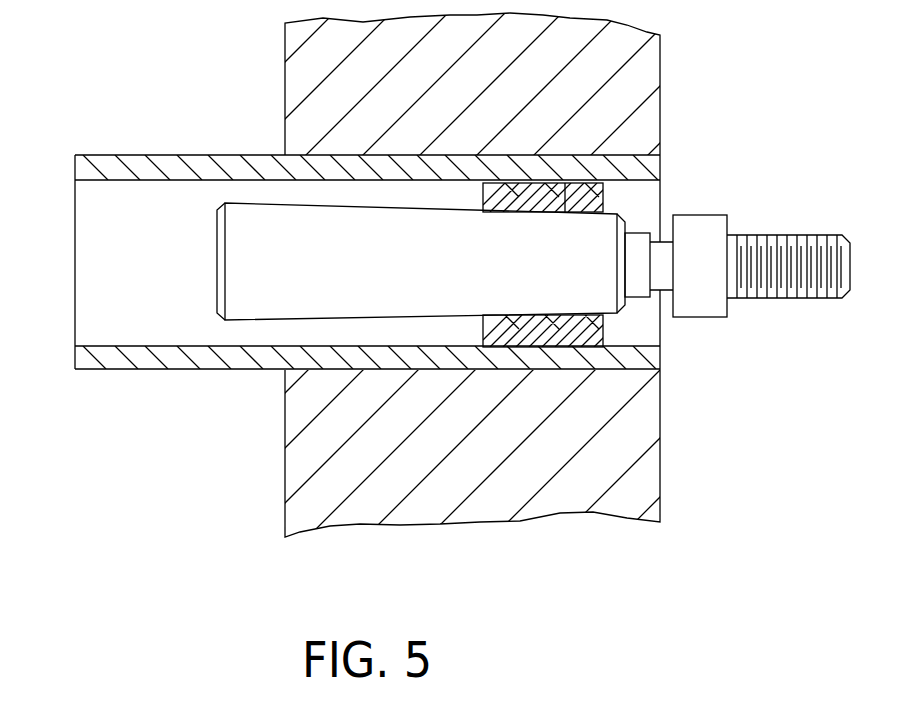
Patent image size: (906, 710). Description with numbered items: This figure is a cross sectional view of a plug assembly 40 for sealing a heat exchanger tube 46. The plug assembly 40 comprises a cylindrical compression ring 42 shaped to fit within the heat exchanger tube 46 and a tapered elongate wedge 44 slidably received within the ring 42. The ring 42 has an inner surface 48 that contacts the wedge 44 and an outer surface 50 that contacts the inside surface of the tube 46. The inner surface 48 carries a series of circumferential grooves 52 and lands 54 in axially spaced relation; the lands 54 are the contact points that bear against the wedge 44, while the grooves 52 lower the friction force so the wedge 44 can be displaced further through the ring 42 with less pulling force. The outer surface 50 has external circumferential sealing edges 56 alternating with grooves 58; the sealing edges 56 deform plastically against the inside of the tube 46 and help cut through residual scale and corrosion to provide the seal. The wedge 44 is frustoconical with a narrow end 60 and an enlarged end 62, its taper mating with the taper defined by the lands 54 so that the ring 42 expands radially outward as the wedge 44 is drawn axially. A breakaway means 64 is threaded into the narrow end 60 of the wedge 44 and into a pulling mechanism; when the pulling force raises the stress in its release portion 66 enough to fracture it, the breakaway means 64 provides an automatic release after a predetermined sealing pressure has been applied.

The plug assembly 40 is at (765, 118).
The ring 42 is at (602, 330).
The tapered elongate wedge 44 is at (395, 261).
The heat exchanger tube 46 is at (390, 241).
The inner surface 48 is at (515, 214).
The outer surface 50 is at (602, 370).
The grooves 52 is at (544, 214).
The lands 54 is at (562, 214).
The sealing edges 56 is at (507, 182).
The grooves 58 is at (573, 154).
The narrow end 60 is at (620, 309).
The enlarged end 62 is at (217, 226).
The breakaway means 64 is at (727, 214).
The release portion 66 is at (664, 240).